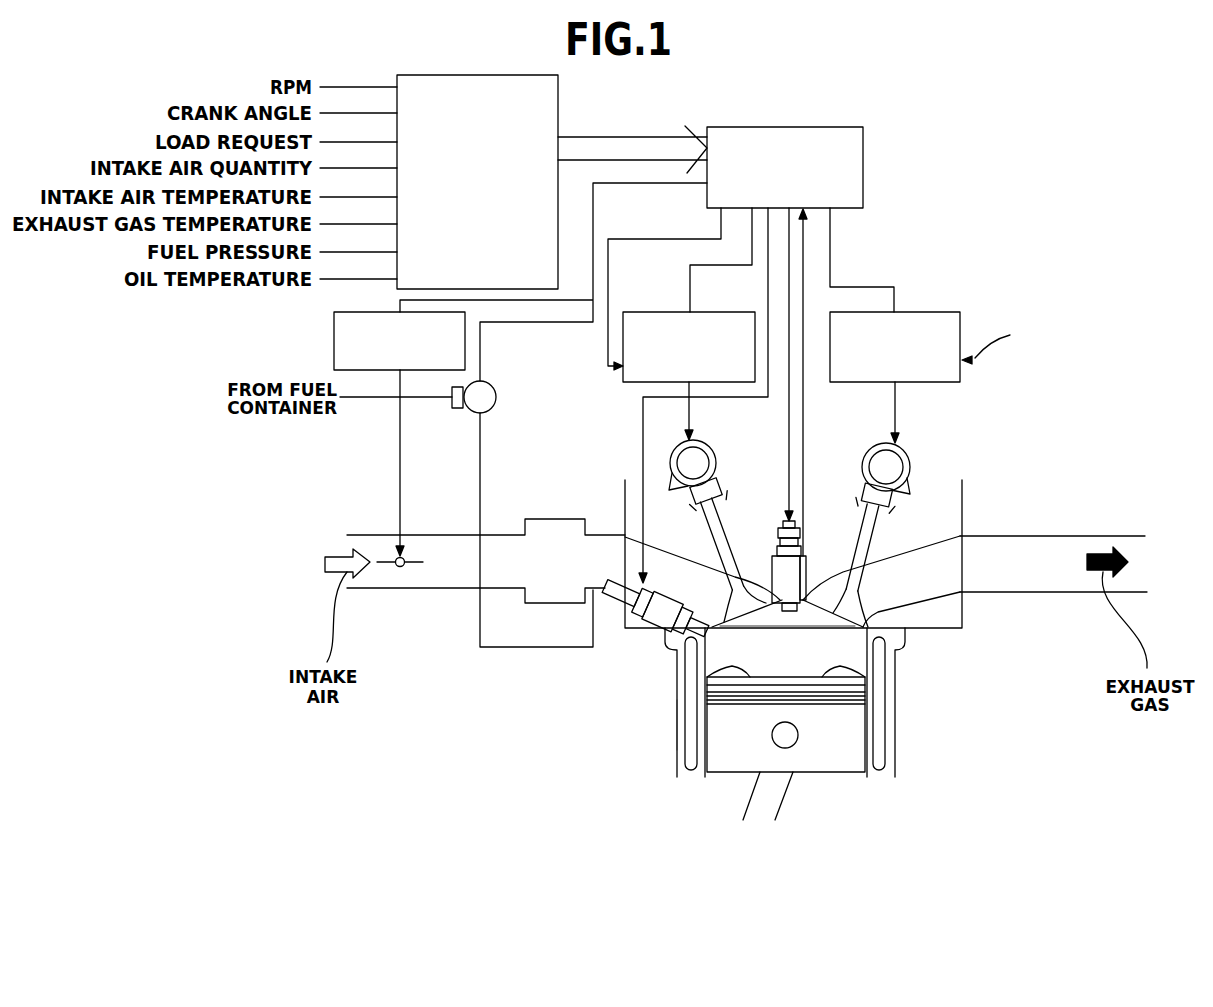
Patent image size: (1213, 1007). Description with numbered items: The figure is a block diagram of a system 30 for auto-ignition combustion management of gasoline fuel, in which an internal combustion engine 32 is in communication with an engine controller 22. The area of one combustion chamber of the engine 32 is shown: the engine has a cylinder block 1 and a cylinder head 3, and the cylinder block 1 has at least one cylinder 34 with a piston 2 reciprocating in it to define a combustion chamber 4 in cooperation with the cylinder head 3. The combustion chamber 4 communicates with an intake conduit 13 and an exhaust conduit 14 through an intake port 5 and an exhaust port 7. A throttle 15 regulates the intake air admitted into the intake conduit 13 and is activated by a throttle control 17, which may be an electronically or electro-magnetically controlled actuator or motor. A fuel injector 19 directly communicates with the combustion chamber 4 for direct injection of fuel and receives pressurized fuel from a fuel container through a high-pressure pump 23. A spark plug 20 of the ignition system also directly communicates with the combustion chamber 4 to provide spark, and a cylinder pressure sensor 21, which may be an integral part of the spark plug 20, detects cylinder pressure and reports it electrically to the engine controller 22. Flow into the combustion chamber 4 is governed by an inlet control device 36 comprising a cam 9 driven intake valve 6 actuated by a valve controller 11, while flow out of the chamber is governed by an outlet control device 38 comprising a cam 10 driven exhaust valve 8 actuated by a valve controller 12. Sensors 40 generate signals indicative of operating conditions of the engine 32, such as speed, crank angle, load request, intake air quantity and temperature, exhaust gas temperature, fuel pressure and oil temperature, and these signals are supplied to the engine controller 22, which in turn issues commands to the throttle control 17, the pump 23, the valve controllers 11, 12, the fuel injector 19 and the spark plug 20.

The cylinder block 1 is at (677, 727).
The piston 2 is at (835, 748).
The cylinder head 3 is at (942, 617).
The combustion chamber 4 is at (792, 620).
The intake port 5 is at (633, 535).
The intake valve 6 is at (720, 508).
The exhaust port 7 is at (930, 568).
The exhaust valve 8 is at (873, 525).
The cam 9 is at (668, 470).
The cam 10 is at (905, 457).
The valve controller 11 is at (667, 311).
The valve controller 12 is at (937, 311).
The intake conduit 13 is at (498, 563).
The exhaust conduit 14 is at (1042, 580).
The throttle 15 is at (400, 568).
The throttle control 17 is at (334, 341).
The fuel injector 19 is at (650, 622).
The spark plug 20 is at (778, 535).
The cylinder pressure sensor 21 is at (808, 582).
The engine controller 22 is at (863, 157).
The high-pressure pump 23 is at (491, 382).
The system 30 is at (1012, 99).
The internal combustion engine 32 is at (660, 766).
The cylinder 34 is at (710, 657).
The inlet control device 36 is at (614, 364).
The outlet control device 38 is at (1001, 341).
The sensors 40 is at (558, 128).